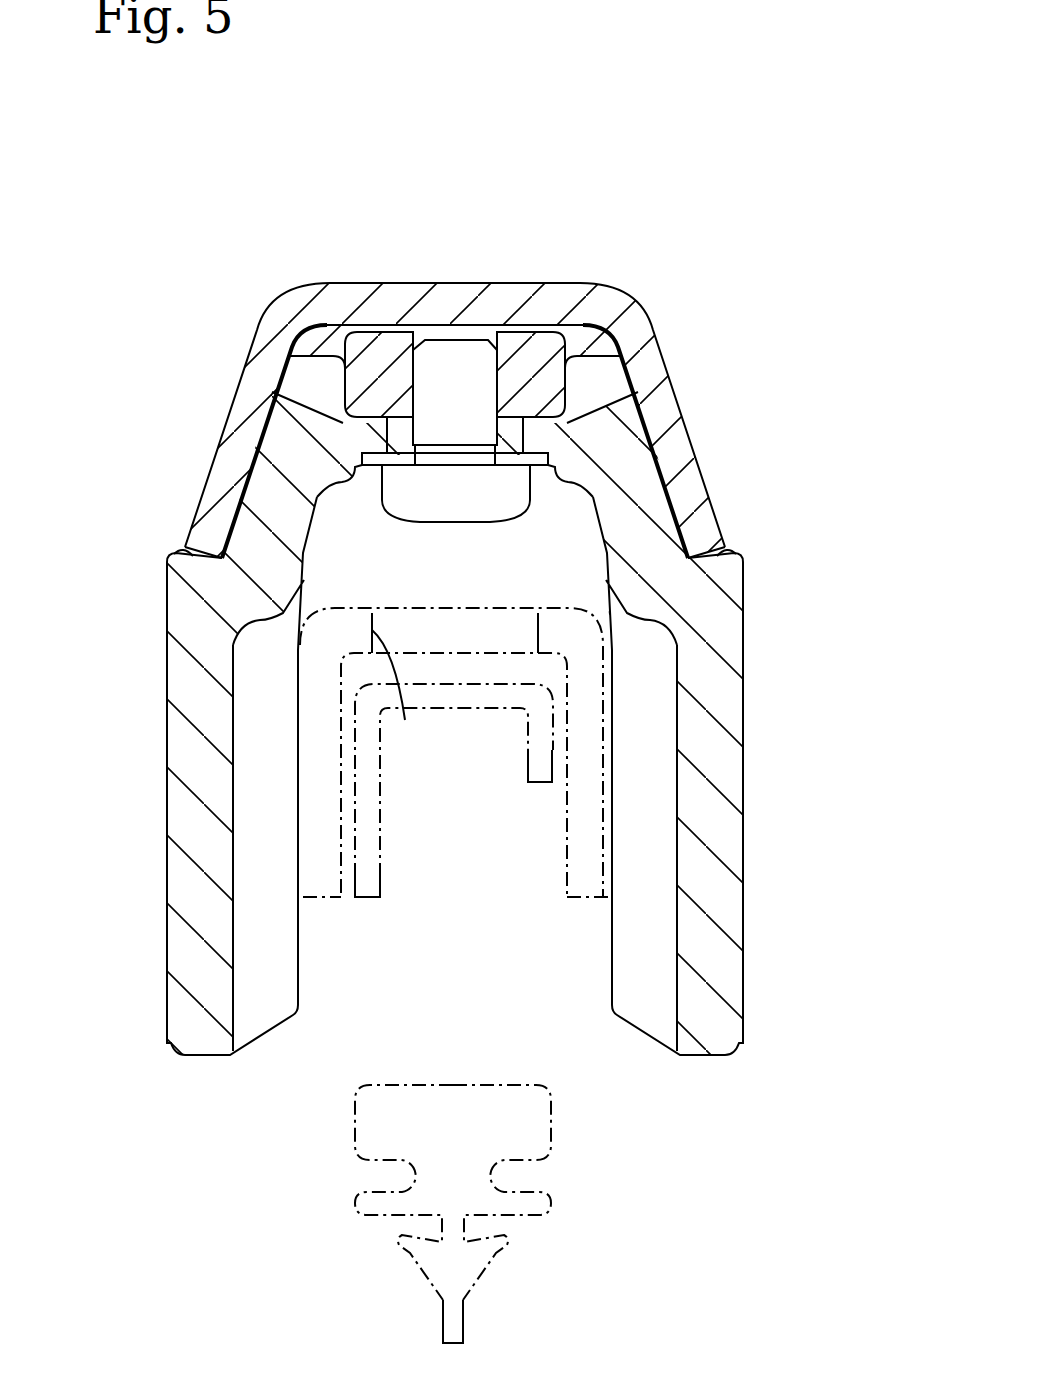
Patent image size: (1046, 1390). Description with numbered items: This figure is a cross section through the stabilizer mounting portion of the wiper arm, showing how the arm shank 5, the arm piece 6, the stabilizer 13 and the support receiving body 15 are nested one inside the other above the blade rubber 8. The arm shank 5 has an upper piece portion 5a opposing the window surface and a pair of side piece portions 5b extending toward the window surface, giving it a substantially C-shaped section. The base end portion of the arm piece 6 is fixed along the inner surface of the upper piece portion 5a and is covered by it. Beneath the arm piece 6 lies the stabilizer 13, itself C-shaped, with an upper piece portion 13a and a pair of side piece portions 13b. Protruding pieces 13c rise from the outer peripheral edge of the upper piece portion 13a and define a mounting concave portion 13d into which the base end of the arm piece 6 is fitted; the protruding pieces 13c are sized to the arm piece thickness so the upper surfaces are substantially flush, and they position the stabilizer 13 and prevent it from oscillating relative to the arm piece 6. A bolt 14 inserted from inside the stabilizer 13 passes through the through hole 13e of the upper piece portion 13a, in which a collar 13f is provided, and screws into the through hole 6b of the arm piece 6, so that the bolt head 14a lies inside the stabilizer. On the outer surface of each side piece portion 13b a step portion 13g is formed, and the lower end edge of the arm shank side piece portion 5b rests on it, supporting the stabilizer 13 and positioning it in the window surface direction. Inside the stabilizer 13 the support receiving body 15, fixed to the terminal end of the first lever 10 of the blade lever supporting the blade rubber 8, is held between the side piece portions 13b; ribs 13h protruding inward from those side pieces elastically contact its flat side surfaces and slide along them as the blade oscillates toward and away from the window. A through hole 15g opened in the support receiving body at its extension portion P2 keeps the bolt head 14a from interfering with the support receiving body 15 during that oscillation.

The arm shank 5 is at (617, 287).
The upper piece portion 5a is at (515, 300).
The side piece portions 5b is at (673, 463).
The arm piece 6 is at (530, 350).
The through hole 6b is at (418, 333).
The blade rubber 8 is at (453, 1267).
The first lever 10 is at (540, 750).
The stabilizer 13 is at (765, 610).
The upper piece portion 13a is at (677, 380).
The side piece portions 13b is at (190, 957).
The protruding piece 13c is at (325, 362).
The mounting concave portion 13d is at (542, 403).
The through hole 13e is at (395, 445).
The collar 13f is at (390, 430).
The step portion 13g is at (183, 563).
The ribs 13h is at (633, 817).
The bolt 14 is at (458, 375).
The bolt head 14a is at (440, 492).
The support receiving body 15 is at (590, 758).
The through hole 15g is at (405, 720).
The extension portion P2 is at (578, 900).